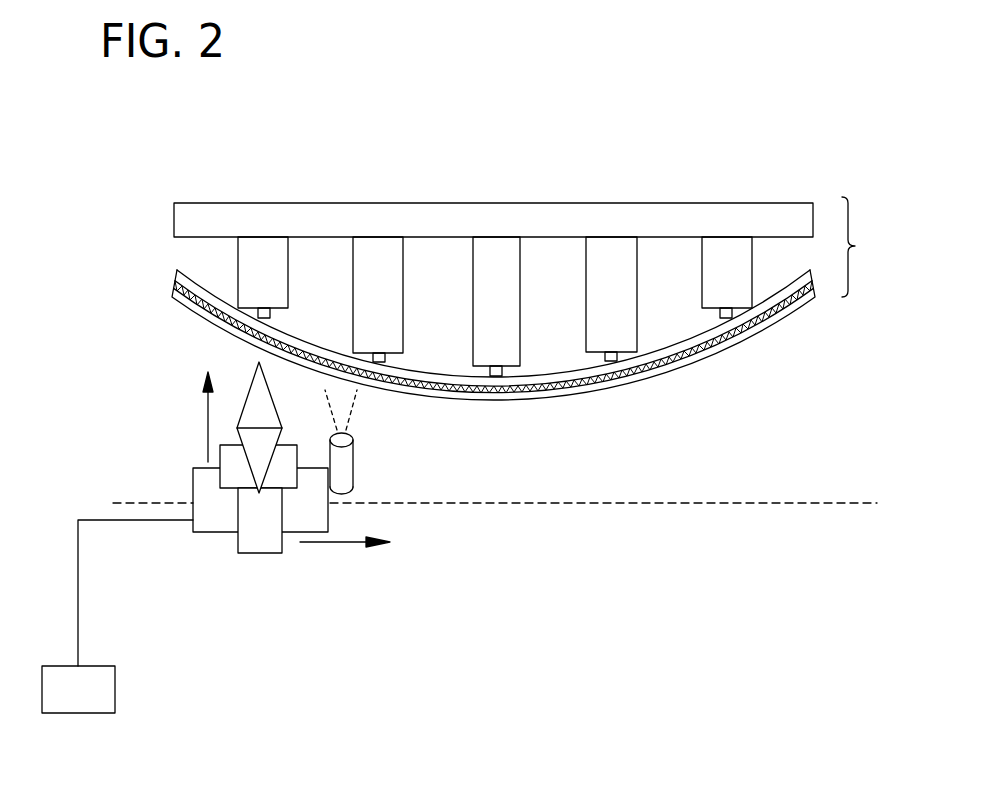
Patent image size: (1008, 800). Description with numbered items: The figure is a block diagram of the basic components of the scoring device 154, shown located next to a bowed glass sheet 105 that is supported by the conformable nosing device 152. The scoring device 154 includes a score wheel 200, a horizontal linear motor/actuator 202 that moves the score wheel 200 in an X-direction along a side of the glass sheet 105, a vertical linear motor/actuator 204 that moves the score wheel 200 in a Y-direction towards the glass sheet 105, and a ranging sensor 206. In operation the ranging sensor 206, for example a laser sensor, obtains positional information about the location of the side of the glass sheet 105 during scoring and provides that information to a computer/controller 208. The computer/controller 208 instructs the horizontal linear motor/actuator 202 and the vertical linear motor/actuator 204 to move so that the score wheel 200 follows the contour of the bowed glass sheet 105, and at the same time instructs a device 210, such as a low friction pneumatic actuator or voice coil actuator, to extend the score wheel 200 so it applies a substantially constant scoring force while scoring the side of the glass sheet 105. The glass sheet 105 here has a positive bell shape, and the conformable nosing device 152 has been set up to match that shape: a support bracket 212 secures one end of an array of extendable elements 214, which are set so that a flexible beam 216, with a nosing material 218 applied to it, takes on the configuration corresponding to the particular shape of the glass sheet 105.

The bowed glass sheet 105 is at (460, 315).
The conformable nosing device 152 is at (873, 247).
The scoring device 154 is at (440, 482).
The score wheel 200 is at (236, 512).
The horizontal linear motor/actuator 202 is at (220, 533).
The vertical linear motor/actuator 204 is at (257, 553).
The ranging sensor 206 is at (350, 432).
The computer/controller 208 is at (85, 693).
The device 210 is at (292, 477).
The support bracket 212 is at (722, 212).
The extendable elements 214 is at (353, 281).
The flexible beam 216 is at (175, 273).
The nosing material 218 is at (175, 290).